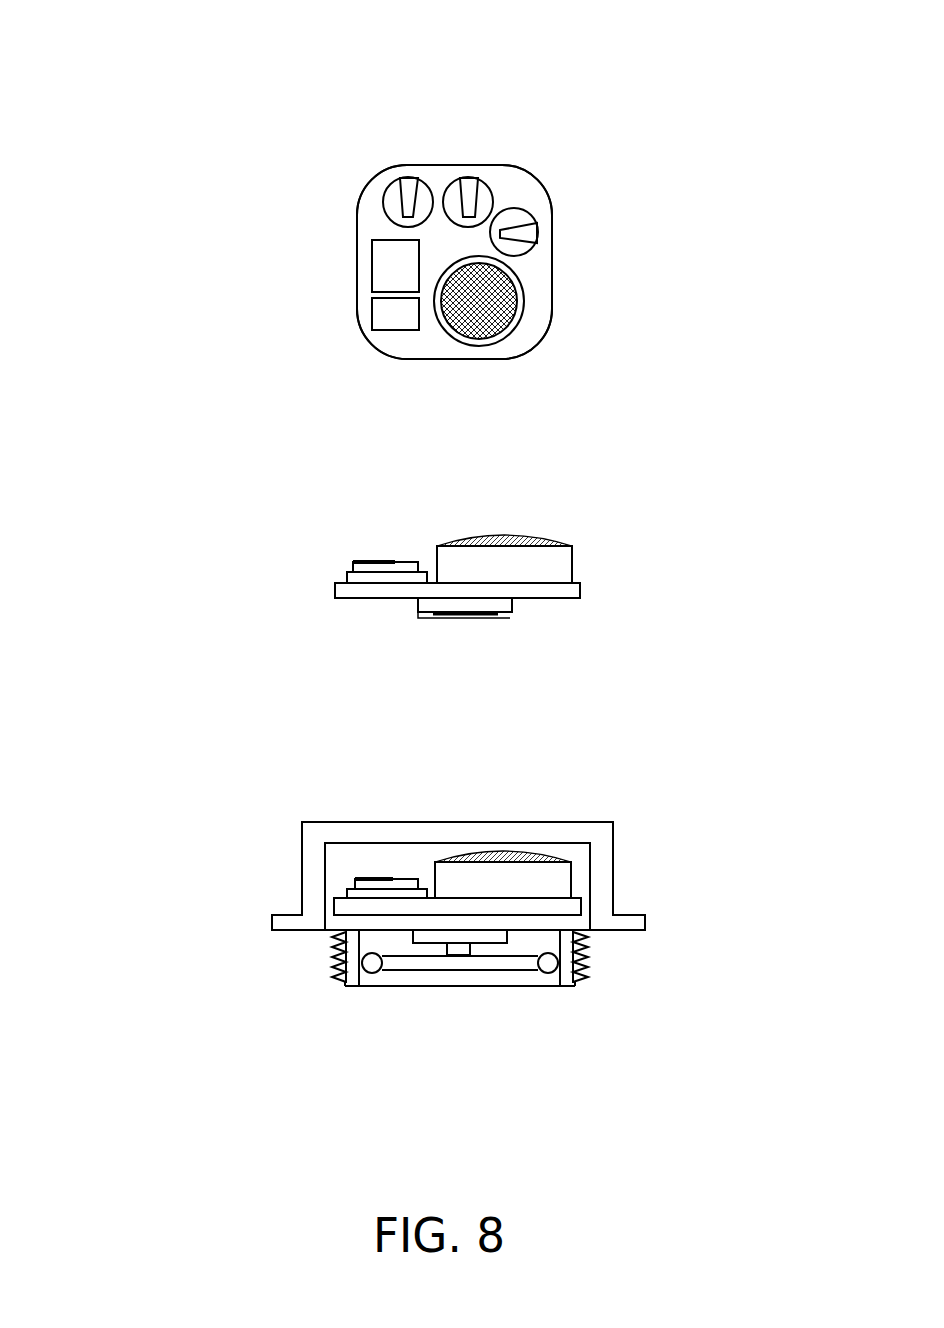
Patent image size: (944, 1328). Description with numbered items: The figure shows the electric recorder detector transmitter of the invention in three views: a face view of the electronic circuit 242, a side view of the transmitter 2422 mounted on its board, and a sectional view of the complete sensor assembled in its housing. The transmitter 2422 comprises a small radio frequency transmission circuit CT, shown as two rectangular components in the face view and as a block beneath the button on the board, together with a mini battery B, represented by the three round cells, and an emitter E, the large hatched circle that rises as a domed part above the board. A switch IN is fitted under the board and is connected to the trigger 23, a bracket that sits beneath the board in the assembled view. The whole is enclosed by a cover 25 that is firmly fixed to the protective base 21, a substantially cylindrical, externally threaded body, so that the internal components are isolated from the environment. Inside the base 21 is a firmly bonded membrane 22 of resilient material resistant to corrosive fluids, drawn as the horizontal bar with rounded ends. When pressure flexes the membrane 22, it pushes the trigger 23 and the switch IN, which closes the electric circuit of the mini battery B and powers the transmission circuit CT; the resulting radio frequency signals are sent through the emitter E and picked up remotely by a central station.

The electronic circuit 242 is at (212, 397).
The transmitter 2422 is at (376, 180).
The mini battery B is at (409, 197).
The small radio frequency transmission circuit CT is at (395, 313).
The emitter E is at (480, 302).
The switch IN is at (473, 614).
The cover 25 is at (313, 838).
The trigger 23 is at (460, 937).
The base 21 is at (330, 970).
The membrane 22 is at (460, 967).